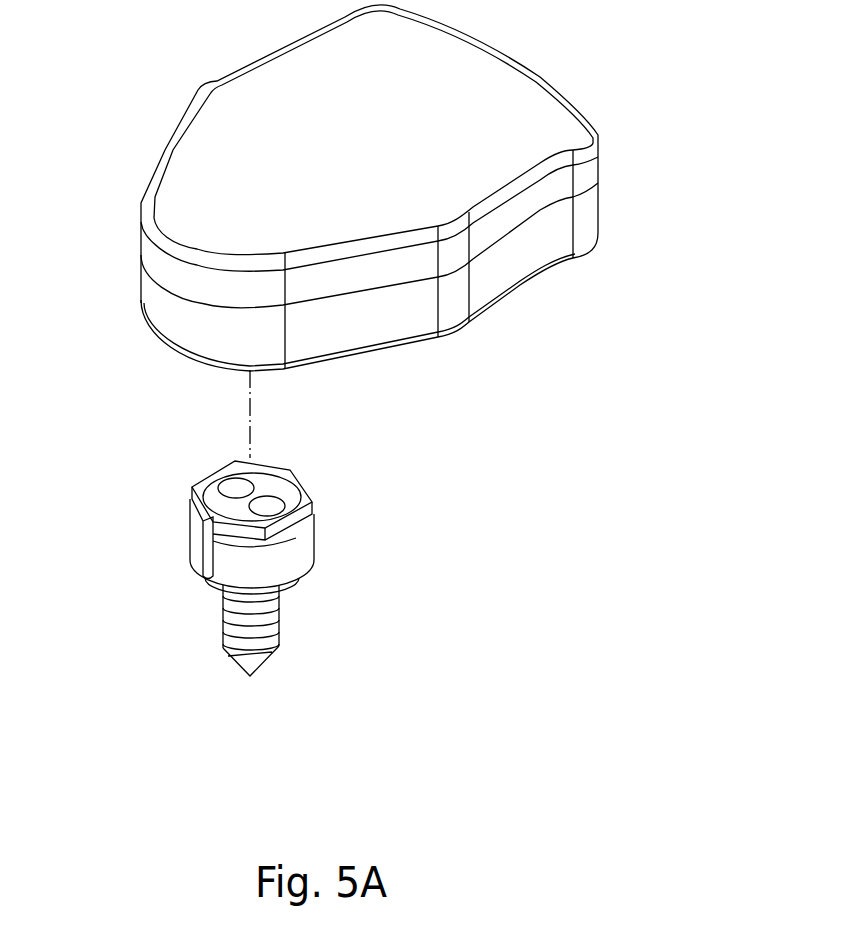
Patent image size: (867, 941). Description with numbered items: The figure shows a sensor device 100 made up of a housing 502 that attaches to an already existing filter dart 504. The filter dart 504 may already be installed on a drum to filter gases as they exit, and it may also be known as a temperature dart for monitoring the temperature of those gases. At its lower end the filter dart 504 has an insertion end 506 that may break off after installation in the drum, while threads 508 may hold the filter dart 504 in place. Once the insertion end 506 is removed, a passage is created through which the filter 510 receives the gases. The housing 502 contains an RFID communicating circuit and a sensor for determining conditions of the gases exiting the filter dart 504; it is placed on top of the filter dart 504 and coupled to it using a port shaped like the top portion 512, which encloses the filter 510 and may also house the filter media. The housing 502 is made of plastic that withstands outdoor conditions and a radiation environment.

The sensor device 100 is at (398, 188).
The housing 502 is at (132, 283).
The filter dart 504 is at (252, 574).
The insertion end 506 is at (253, 672).
The threads 508 is at (281, 612).
The filter 510 is at (313, 533).
The top portion 512 is at (188, 533).